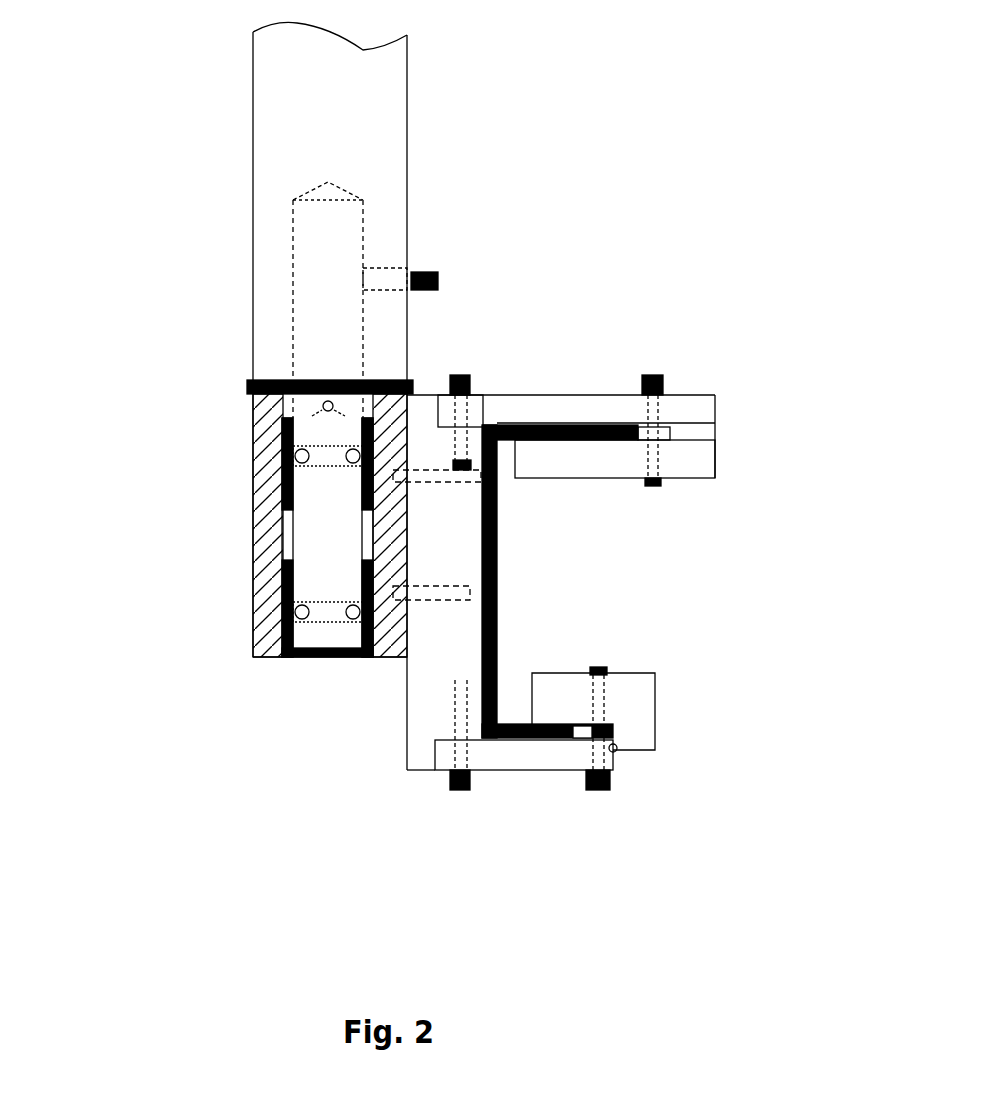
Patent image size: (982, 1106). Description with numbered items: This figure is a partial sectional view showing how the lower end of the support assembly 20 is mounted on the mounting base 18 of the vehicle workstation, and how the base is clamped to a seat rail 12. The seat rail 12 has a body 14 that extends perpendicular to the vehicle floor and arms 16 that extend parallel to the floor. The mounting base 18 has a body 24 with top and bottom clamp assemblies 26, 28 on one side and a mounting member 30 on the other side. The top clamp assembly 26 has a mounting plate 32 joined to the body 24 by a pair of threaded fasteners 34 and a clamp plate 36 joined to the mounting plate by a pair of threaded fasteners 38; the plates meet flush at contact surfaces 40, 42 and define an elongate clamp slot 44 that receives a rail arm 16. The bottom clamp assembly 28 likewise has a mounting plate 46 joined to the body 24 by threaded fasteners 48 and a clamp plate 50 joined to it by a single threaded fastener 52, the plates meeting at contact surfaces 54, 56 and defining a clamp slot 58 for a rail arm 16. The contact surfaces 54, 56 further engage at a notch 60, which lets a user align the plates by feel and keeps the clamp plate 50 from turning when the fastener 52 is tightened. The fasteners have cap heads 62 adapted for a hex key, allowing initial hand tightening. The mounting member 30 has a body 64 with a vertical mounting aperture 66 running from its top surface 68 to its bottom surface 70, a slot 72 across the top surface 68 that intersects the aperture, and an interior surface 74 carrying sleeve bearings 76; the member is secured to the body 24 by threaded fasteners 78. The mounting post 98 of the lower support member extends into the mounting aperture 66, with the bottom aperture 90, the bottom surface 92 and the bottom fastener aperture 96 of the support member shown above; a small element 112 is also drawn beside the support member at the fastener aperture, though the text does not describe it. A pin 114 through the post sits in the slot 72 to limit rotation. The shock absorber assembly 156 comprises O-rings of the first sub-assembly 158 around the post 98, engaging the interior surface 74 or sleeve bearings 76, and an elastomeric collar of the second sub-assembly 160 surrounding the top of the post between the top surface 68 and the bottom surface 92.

The seat rail 12 is at (500, 565).
The body 14 is at (472, 593).
The arm 16 is at (527, 393).
The mounting base 18 is at (135, 612).
The support assembly 20 is at (253, 116).
The body 24 is at (432, 703).
The top clamp assembly 26 is at (515, 552).
The bottom clamp assembly 28 is at (573, 583).
The mounting member 30 is at (291, 526).
The mounting plate 32 is at (548, 393).
The threaded fasteners 34 is at (463, 375).
The clamp plate 36 is at (686, 465).
The threaded fasteners 38 is at (654, 374).
The plate contact surface 40 is at (690, 393).
The plate contact surface 42 is at (713, 448).
The clamp slot 44 is at (640, 393).
The mounting plate 46 is at (495, 780).
The threaded fasteners 48 is at (460, 793).
The clamp plate 50 is at (632, 678).
The threaded fastener 52 is at (598, 793).
The plate contact surface 54 is at (617, 745).
The plate contact surface 56 is at (616, 752).
The clamp slot 58 is at (583, 724).
The notch 60 is at (615, 745).
The head 62 is at (470, 387).
The body 64 is at (268, 592).
The mounting aperture 66 is at (288, 527).
The top surface 68 is at (253, 405).
The bottom surface 70 is at (277, 658).
The slot 72 is at (280, 420).
The interior surface 74 is at (370, 530).
The sleeve bearings 76 is at (368, 495).
The threaded fasteners 78 is at (447, 580).
The bottom aperture 90 is at (345, 188).
The bottom surface 92 is at (283, 382).
The bottom fastener aperture 96 is at (392, 272).
The mounting post 98 is at (290, 246).
The stop 112 is at (440, 281).
The pin 114 is at (320, 407).
The shock absorber assembly 156 is at (203, 372).
The first shock absorber sub-assembly 158 is at (353, 464).
The second shock absorber sub-assembly 160 is at (253, 386).